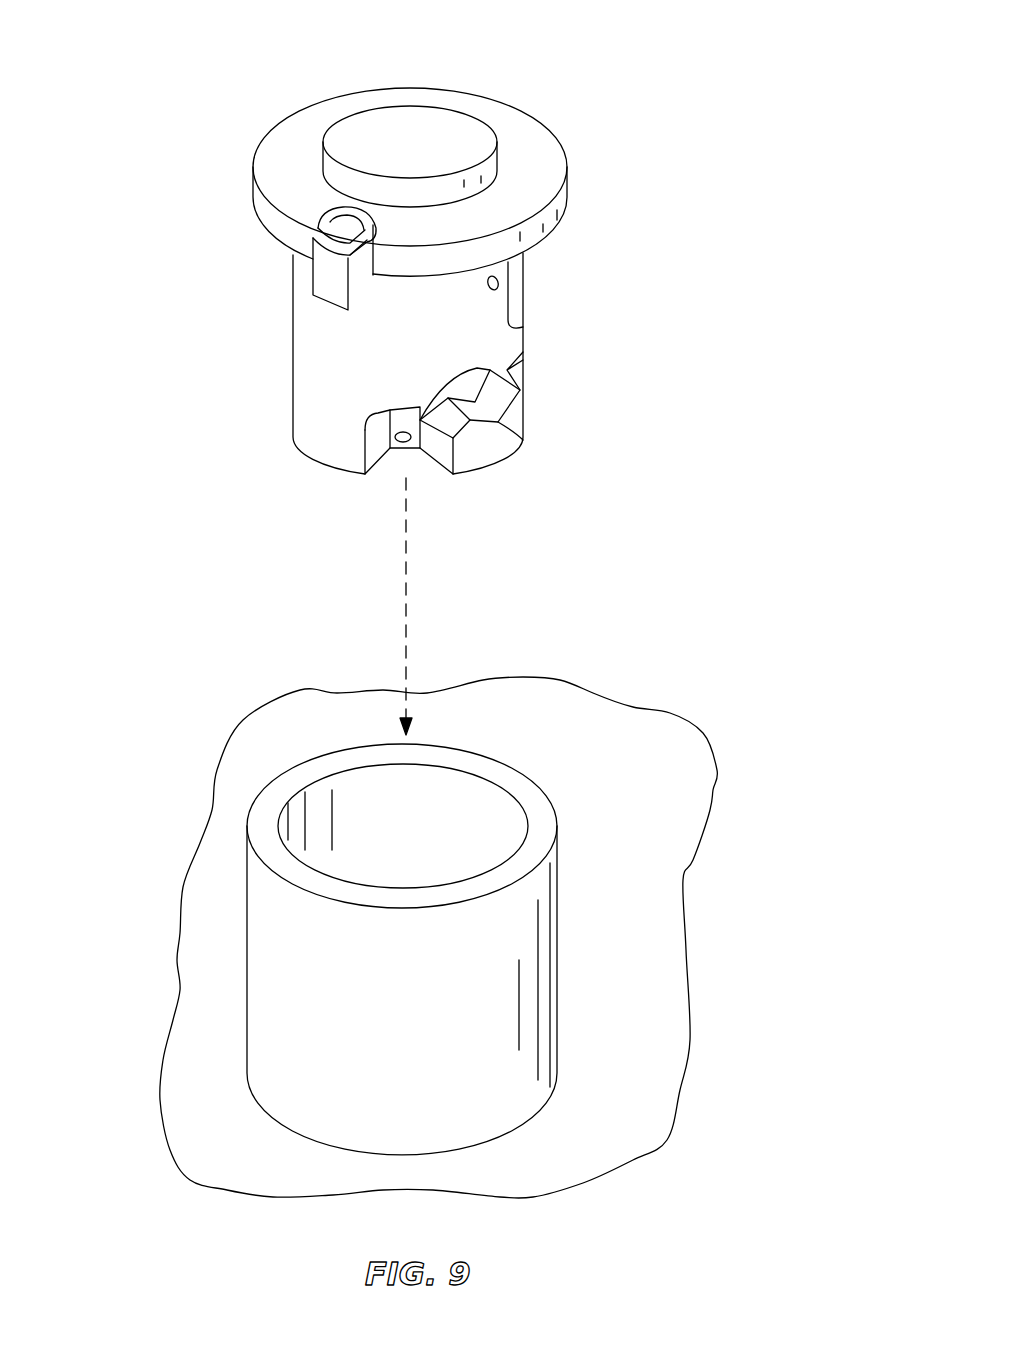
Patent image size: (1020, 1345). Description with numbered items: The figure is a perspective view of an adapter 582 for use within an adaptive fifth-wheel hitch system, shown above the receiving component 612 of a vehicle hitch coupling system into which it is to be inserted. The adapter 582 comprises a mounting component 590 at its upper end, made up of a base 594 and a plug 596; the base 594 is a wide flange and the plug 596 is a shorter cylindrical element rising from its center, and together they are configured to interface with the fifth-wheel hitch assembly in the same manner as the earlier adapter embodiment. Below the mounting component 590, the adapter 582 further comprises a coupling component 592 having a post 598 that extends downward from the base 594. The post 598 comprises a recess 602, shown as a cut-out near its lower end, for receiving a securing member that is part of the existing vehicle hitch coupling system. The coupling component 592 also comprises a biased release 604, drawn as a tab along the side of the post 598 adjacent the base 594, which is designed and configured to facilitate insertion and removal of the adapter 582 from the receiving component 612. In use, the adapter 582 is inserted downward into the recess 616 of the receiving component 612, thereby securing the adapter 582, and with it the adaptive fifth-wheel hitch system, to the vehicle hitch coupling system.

The adapter 582 is at (597, 73).
The mounting component 590 is at (215, 90).
The coupling component 592 is at (560, 245).
The base 594 is at (538, 150).
The plug 596 is at (423, 132).
The post 598 is at (322, 358).
The recess 602 is at (413, 458).
The biased release 604 is at (325, 280).
The receiving component 612 is at (288, 993).
The recess 616 is at (477, 812).